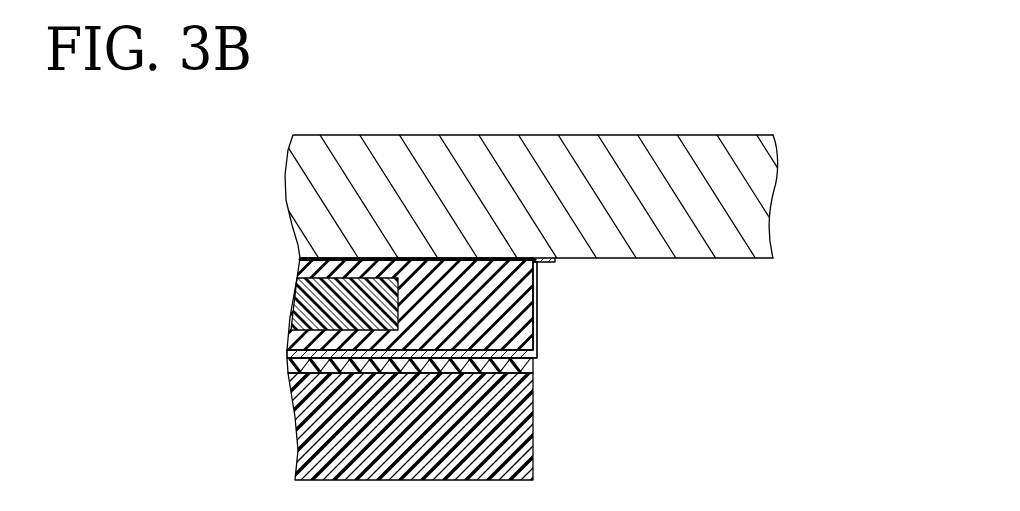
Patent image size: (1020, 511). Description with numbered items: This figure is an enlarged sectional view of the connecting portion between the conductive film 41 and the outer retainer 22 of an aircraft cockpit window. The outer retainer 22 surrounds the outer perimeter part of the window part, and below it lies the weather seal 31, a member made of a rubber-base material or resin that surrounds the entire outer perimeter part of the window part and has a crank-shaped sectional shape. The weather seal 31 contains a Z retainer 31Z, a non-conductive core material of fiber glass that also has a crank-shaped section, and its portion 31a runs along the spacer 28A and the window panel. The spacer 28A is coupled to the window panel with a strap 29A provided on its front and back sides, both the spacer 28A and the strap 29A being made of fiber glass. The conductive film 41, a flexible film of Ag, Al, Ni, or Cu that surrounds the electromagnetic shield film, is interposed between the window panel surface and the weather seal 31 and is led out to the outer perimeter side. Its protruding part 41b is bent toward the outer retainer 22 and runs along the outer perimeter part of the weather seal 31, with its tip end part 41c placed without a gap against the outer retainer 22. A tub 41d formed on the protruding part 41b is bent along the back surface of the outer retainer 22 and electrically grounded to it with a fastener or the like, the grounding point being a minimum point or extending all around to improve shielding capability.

The outer retainer 22 is at (753, 201).
The weather seal 31 is at (442, 268).
The Z retainer 31Z is at (336, 278).
The portion of weather seal 31a is at (487, 258).
The conductive film 41 is at (480, 346).
The protruding part 41b is at (538, 301).
The tip end part 41c is at (544, 258).
The tub 41d is at (548, 263).
The strap 29A is at (530, 365).
The spacer 28A is at (523, 448).